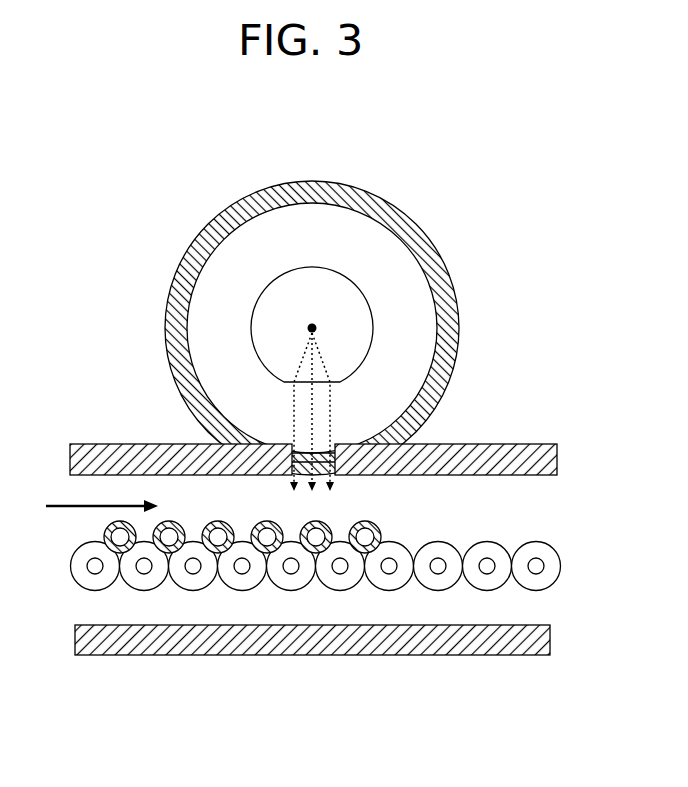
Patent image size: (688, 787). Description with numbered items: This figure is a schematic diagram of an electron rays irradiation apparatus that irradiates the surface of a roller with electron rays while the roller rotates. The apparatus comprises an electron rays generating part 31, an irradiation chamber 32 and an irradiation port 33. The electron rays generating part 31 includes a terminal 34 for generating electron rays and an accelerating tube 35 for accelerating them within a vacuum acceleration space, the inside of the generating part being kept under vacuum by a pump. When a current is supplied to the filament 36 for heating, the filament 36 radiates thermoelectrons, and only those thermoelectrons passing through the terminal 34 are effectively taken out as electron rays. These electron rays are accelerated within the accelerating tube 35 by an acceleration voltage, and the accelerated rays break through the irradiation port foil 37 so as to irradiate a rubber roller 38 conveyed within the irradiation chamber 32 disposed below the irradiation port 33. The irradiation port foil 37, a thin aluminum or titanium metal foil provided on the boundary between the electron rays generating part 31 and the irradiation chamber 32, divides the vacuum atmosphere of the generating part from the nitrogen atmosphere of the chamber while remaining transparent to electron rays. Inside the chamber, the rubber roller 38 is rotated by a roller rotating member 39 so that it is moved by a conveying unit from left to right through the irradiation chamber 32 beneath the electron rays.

The electron rays generating part 31 is at (347, 223).
The irradiation chamber 32 is at (433, 612).
The irradiation port 33 is at (335, 473).
The terminal 34 is at (372, 337).
The accelerating tube 35 is at (197, 247).
The filament 36 is at (314, 325).
The irradiation port foil 37 is at (293, 445).
The rubber roller 38 is at (267, 538).
The roller rotating member 39 is at (193, 567).